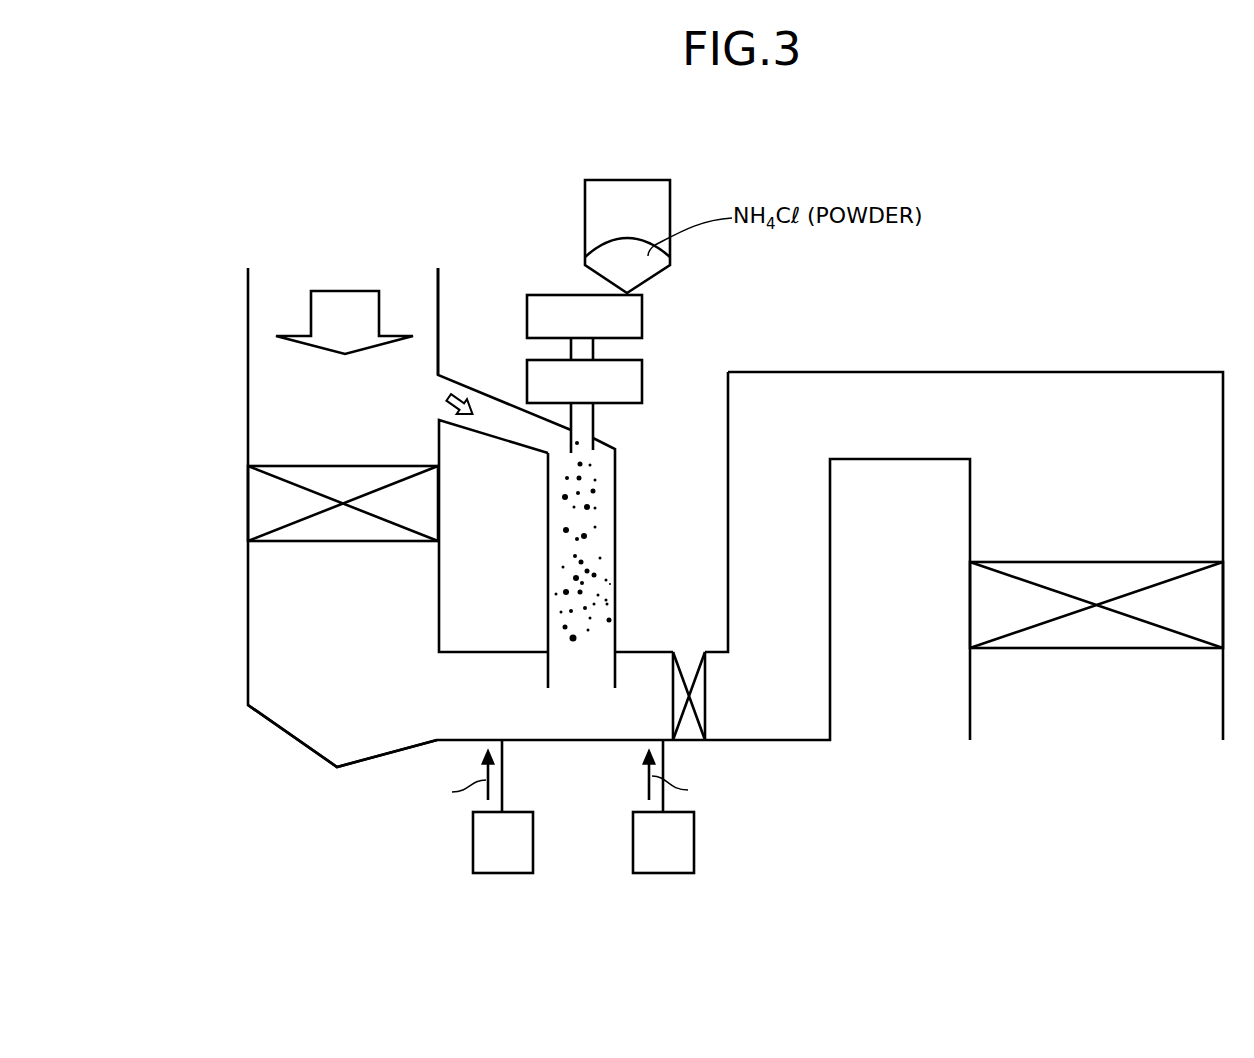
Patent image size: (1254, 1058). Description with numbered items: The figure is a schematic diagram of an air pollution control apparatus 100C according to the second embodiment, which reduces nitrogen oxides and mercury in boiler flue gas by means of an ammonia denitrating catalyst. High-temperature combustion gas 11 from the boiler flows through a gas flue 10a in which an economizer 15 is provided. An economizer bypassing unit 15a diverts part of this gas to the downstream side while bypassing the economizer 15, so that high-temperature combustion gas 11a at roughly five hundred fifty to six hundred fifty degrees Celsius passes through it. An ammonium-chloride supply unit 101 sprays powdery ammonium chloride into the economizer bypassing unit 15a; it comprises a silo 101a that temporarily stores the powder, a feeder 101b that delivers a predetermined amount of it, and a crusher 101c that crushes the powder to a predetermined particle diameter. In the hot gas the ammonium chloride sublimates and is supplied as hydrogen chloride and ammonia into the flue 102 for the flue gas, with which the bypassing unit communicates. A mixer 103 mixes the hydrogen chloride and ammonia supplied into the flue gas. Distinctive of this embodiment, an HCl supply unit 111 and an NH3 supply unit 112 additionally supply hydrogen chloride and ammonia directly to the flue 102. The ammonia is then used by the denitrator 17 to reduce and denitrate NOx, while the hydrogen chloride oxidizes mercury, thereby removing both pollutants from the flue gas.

The air pollution control apparatus 100C is at (1052, 182).
The gas flue 10a is at (438, 290).
The combustion gas 11 is at (309, 312).
The high-temperature combustion gas 11a is at (464, 396).
The economizer 15 is at (247, 496).
The economizer bypassing unit 15a is at (619, 617).
The denitrator 17 is at (965, 643).
The ammonium-chloride supply unit 101 is at (673, 291).
The silo 101a is at (671, 257).
The feeder 101b is at (643, 319).
The crusher 101c is at (643, 382).
The flue 102 is at (295, 742).
The mixer 103 is at (681, 652).
The HCl supply unit 111 is at (473, 848).
The NH3 supply unit 112 is at (694, 845).